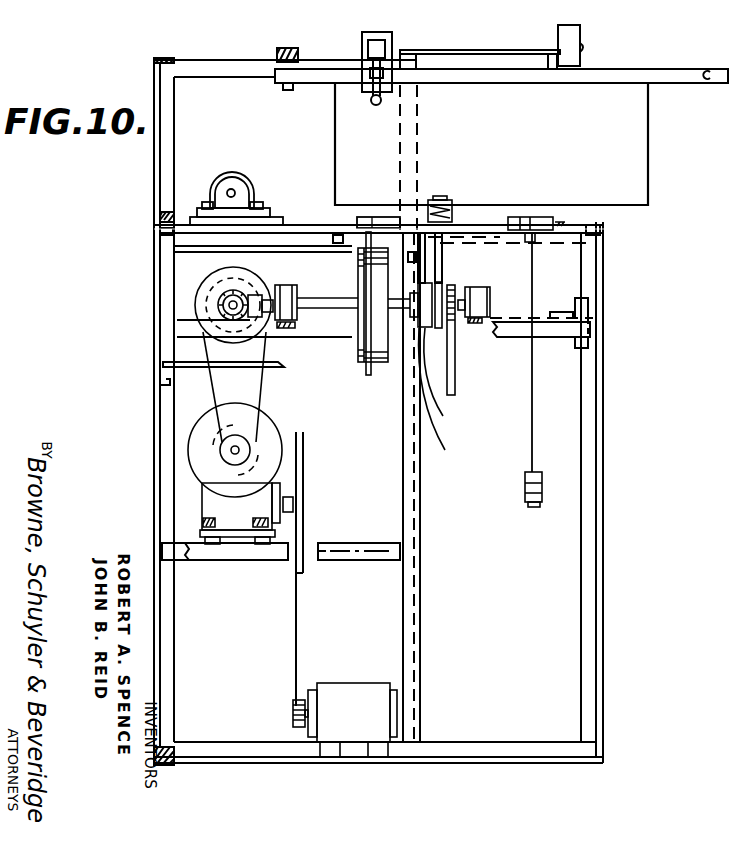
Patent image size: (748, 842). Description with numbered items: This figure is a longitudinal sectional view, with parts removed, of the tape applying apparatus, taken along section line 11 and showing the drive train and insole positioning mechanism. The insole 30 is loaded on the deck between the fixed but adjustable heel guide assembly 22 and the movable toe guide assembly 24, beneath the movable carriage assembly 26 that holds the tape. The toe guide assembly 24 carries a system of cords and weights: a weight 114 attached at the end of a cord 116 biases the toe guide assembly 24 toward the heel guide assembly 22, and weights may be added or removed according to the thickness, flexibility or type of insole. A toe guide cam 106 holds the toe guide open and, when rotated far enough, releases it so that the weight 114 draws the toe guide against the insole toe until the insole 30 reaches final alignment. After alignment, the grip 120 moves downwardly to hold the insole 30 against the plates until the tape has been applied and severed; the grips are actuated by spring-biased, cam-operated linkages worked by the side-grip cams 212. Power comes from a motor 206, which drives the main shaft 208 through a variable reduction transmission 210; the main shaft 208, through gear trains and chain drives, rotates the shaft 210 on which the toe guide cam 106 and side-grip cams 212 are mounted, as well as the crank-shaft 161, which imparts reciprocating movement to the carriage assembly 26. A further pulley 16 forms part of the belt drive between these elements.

The section line 11- 11 is at (125, 28).
The carriage assembly 26 is at (615, 147).
The crank-shaft 161 is at (235, 193).
The toe guide assembly 24 is at (372, 212).
The right grip 120 is at (451, 219).
The insole 30 is at (477, 227).
The heel guide assembly 22 is at (546, 212).
The main shaft 208 is at (242, 298).
The variable reduction transmission 210 is at (322, 307).
The toe guide cam 106 is at (378, 346).
The pulley 16 is at (247, 442).
The side-grip cams 212 is at (450, 372).
The cord 116 is at (552, 384).
The weight 114 is at (525, 490).
The motor 206 is at (367, 710).